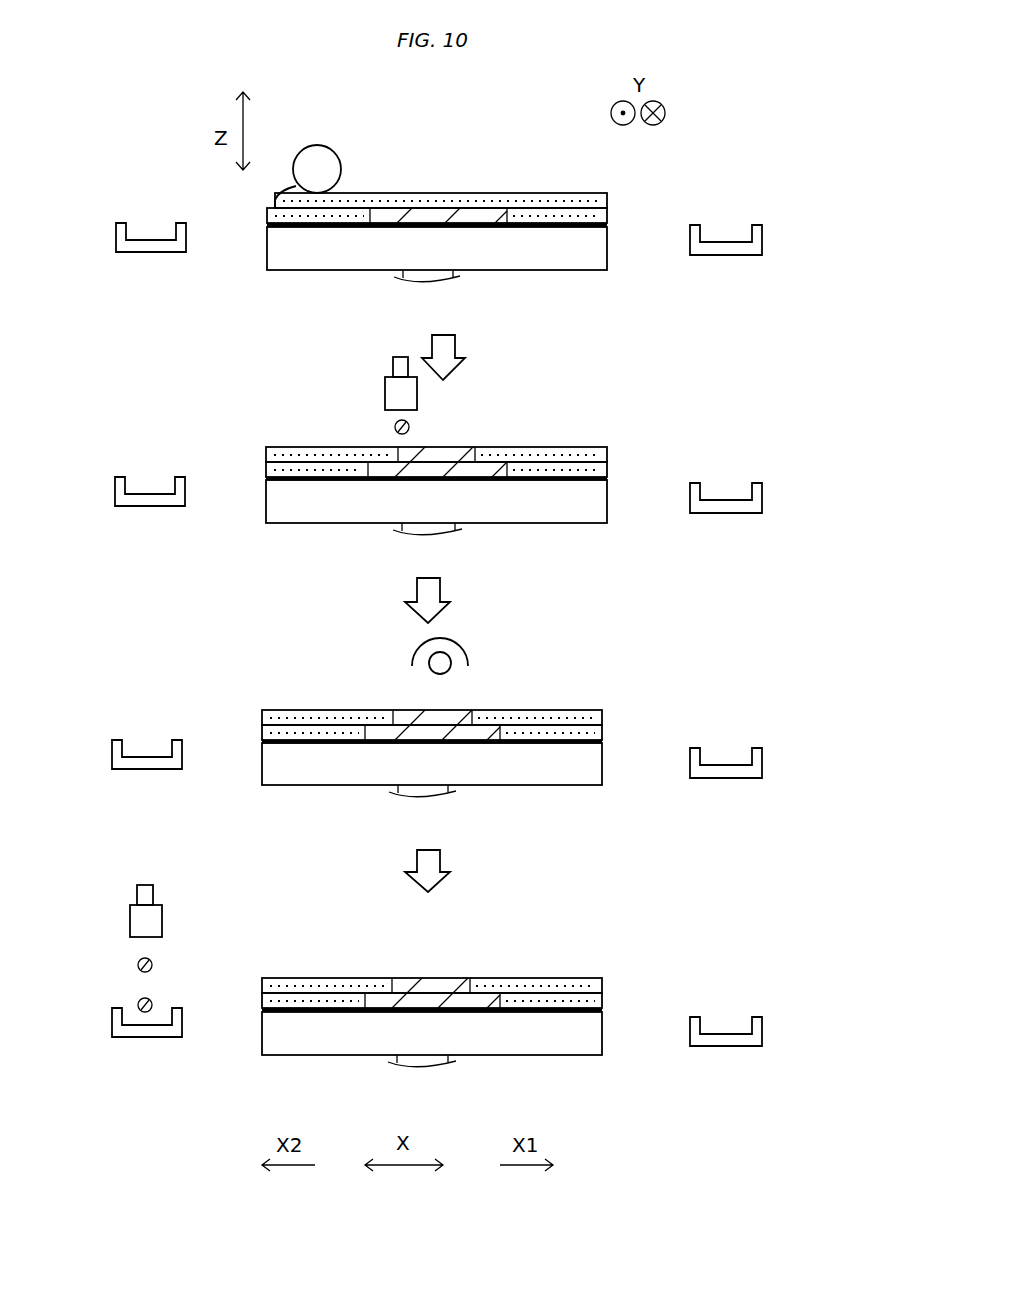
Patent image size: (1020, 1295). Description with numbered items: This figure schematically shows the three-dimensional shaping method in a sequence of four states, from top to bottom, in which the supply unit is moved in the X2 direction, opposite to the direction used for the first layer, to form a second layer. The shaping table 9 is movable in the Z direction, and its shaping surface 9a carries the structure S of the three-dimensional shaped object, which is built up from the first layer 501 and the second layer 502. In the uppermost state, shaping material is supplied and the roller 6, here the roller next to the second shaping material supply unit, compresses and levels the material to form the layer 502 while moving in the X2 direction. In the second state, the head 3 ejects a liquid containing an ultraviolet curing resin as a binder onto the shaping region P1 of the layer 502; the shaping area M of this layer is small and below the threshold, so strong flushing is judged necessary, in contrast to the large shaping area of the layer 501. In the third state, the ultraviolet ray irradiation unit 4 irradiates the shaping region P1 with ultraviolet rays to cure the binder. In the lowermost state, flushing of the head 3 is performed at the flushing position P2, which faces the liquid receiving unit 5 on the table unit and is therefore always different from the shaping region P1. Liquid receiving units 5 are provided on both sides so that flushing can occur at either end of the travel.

The head 3 is at (402, 357).
The ultraviolet ray irradiation unit 4 is at (463, 643).
The liquid receiving unit 5 is at (150, 253).
The roller 6 is at (317, 145).
The shaping table 9 is at (300, 253).
The shaping surface 9a is at (292, 217).
The layer 501 is at (267, 225).
The layer 502 is at (608, 200).
The structure S is at (353, 223).
The shaping area M is at (466, 447).
The shaping region P1 is at (481, 403).
The flushing position P2 is at (121, 992).